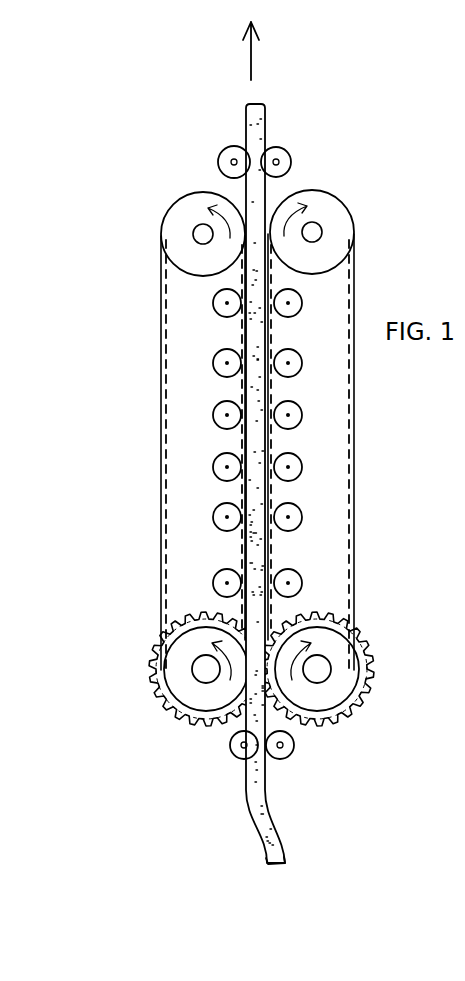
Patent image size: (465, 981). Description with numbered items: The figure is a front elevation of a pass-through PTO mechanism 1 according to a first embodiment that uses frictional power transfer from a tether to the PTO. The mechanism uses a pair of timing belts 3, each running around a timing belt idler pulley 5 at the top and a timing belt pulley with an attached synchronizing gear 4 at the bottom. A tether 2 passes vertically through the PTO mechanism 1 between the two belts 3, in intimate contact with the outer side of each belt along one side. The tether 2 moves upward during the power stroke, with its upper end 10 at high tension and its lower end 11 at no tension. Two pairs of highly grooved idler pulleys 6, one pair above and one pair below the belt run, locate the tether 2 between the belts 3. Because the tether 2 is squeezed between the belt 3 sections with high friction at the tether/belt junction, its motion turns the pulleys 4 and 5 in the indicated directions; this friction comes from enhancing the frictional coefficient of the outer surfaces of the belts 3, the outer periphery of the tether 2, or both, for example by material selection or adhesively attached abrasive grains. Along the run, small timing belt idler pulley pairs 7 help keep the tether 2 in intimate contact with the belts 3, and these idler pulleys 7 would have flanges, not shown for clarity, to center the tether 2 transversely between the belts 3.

The pass-through PTO mechanism 1 is at (352, 104).
The tether 2 is at (280, 821).
The timing belts 3 is at (150, 450).
The timing belt pulleys with attached synchronizing gears 4 is at (150, 693).
The timing belt idler pulleys 5 is at (172, 222).
The highly grooved idler pulleys 6 is at (222, 144).
The small timing belt idler pulley pairs 7 is at (212, 367).
The end 10 is at (275, 90).
The lower end 11 is at (293, 860).